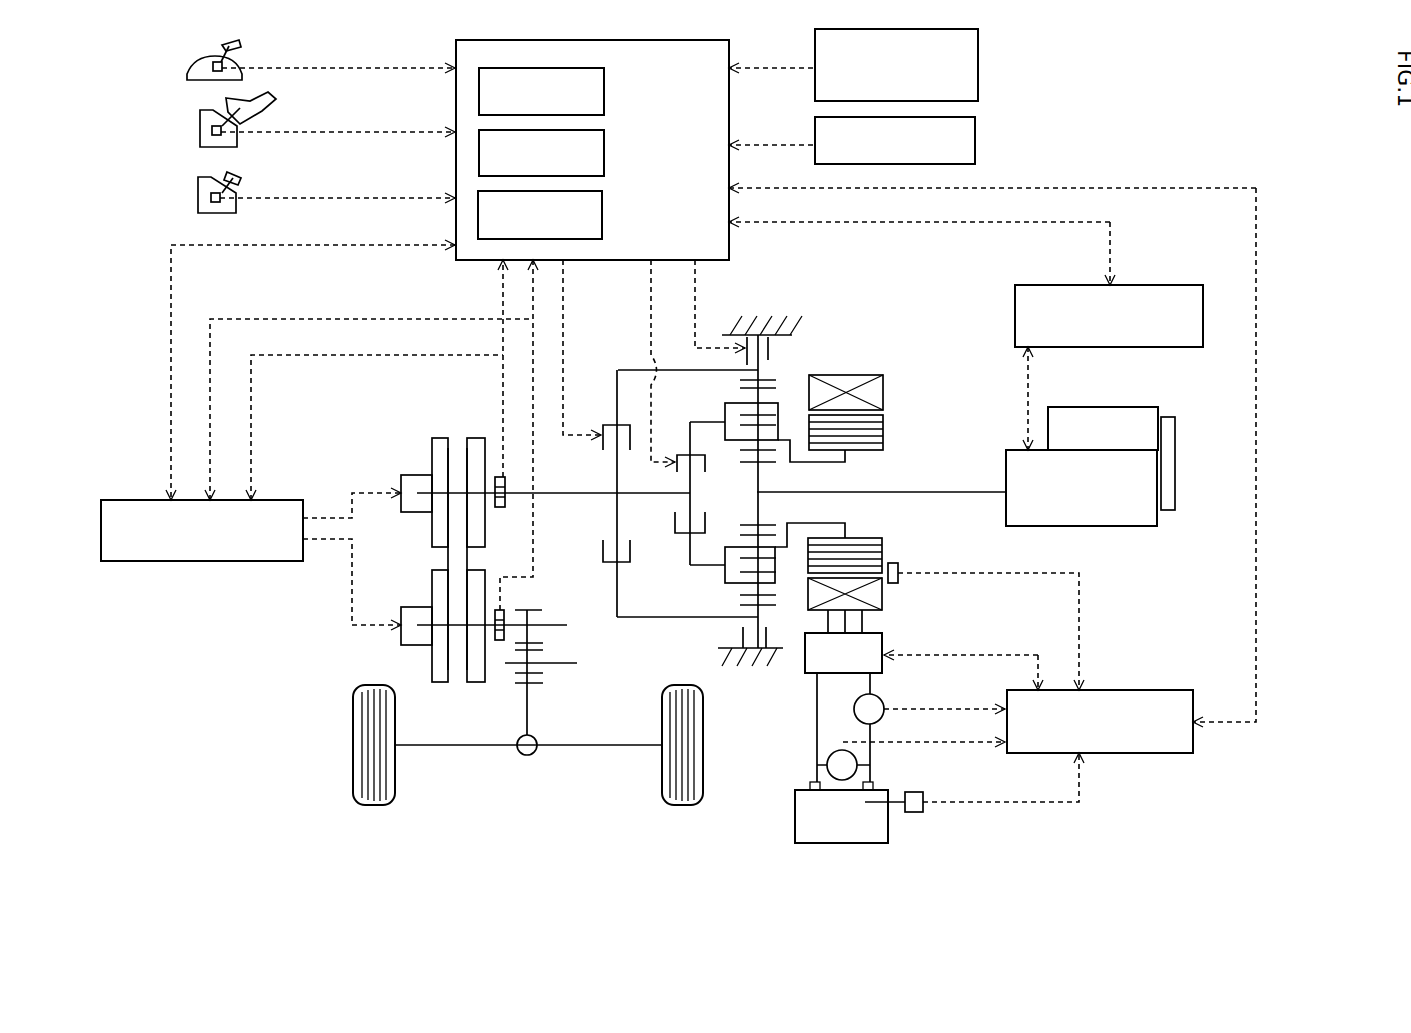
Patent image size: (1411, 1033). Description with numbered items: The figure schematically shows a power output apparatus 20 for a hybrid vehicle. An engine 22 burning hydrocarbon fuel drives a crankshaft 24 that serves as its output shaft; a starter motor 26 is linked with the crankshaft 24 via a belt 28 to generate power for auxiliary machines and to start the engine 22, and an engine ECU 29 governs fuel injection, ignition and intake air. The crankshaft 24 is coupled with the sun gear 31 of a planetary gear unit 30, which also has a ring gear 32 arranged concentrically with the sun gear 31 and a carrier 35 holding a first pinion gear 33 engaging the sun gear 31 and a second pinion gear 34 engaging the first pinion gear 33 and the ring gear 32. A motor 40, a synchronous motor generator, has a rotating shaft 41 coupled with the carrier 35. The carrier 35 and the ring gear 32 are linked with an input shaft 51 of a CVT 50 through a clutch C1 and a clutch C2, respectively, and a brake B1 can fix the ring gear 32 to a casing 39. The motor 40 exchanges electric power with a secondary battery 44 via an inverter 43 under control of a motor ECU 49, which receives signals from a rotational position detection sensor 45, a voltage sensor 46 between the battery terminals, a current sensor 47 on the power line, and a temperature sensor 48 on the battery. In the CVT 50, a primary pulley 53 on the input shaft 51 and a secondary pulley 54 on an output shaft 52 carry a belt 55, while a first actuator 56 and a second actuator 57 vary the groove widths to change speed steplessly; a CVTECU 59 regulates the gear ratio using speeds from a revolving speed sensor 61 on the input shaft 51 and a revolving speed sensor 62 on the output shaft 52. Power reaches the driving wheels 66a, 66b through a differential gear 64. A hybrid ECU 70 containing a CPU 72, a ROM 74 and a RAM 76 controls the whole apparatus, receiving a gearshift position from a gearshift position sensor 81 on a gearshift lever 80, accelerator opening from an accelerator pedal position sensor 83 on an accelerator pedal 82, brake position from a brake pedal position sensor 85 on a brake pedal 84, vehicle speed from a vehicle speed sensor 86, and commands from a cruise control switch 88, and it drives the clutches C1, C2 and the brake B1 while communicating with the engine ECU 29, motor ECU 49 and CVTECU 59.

The power output apparatus 20 is at (1158, 105).
The engine 22 is at (1120, 527).
The crankshaft 24 is at (948, 490).
The starter motor 26 is at (1100, 407).
The belt 28 is at (1177, 462).
The engine ECU 29 is at (1160, 285).
The planetary gear unit 30 is at (892, 322).
The sun gear 31 is at (760, 482).
The ring gear 32 is at (780, 372).
The first pinion gear 33 is at (757, 450).
The second pinion gear 34 is at (780, 403).
The carrier 35 is at (737, 405).
The casing 39 is at (733, 318).
The motor 40 is at (876, 375).
The rotating shaft 41 is at (814, 525).
The inverter 43 is at (885, 650).
The secondary battery 44 is at (793, 820).
The rotational position detection sensor 45 is at (900, 565).
The voltage sensor 46 is at (832, 756).
The current sensor 47 is at (885, 701).
The temperature sensor 48 is at (918, 812).
The motor ECU 49 is at (1150, 753).
The CVT 50 is at (272, 665).
The input shaft 51 is at (563, 500).
The output shaft 52 is at (512, 617).
The primary pulley 53 is at (477, 437).
The secondary pulley 54 is at (473, 683).
The belt 55 is at (452, 561).
The first actuator 56 is at (400, 478).
The second actuator 57 is at (400, 637).
The CVTECU 59 is at (131, 500).
The revolving speed sensor 61 is at (503, 508).
The revolving speed sensor 62 is at (497, 641).
The differential gear 64 is at (585, 648).
The driving wheel 66a is at (353, 730).
The driving wheel 66b is at (703, 730).
The hybrid ECU 70 is at (650, 40).
The CPU 72 is at (604, 92).
The ROM 74 is at (604, 155).
The RAM 76 is at (602, 218).
The gearshift lever 80 is at (224, 47).
The gearshift position sensor 81 is at (228, 64).
The accelerator pedal 82 is at (230, 108).
The accelerator pedal position sensor 83 is at (212, 131).
The brake pedal 84 is at (230, 178).
The brake pedal position sensor 85 is at (211, 198).
The vehicle speed sensor 86 is at (977, 127).
The cruise control switch 88 is at (980, 47).
The brake B1 is at (778, 345).
The clutch C1 is at (677, 463).
The clutch C2 is at (600, 446).